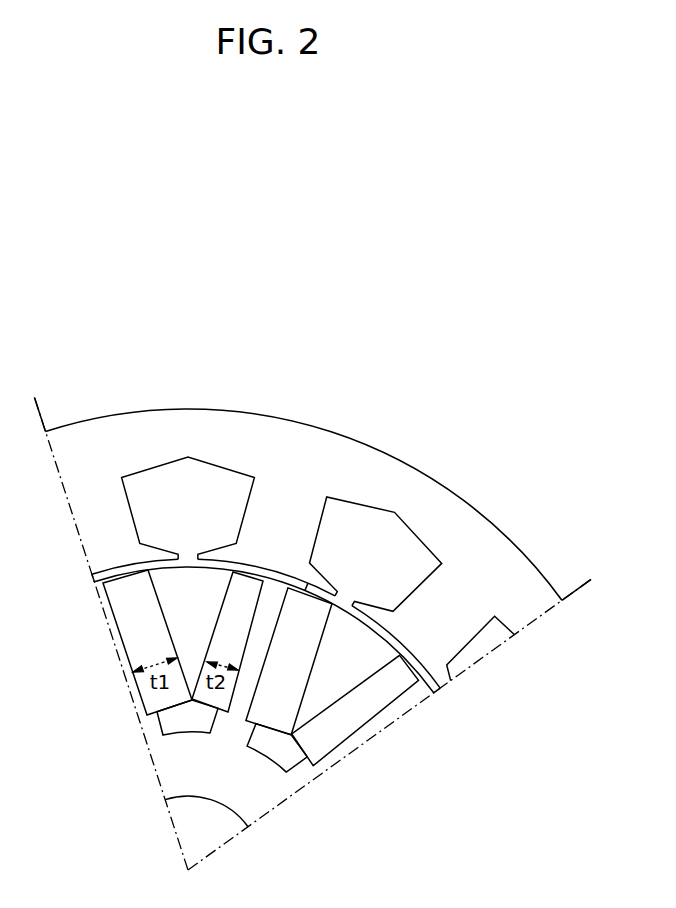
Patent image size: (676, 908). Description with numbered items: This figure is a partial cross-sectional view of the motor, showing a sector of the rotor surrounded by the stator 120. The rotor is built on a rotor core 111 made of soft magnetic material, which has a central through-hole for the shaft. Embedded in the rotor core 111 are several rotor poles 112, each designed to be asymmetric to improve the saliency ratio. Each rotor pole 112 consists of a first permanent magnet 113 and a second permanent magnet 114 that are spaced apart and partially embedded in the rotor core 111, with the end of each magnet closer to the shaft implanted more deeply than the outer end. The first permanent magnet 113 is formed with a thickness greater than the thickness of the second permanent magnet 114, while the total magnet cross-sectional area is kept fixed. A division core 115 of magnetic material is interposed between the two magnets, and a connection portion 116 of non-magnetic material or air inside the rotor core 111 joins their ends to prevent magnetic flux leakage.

The rotor core 111 is at (265, 800).
The rotor pole 112 is at (203, 592).
The first permanent magnet 113 is at (150, 652).
The second permanent magnet 114 is at (230, 627).
The division core 115 is at (170, 587).
The connection portion 116 is at (162, 728).
The stator 120 is at (415, 475).